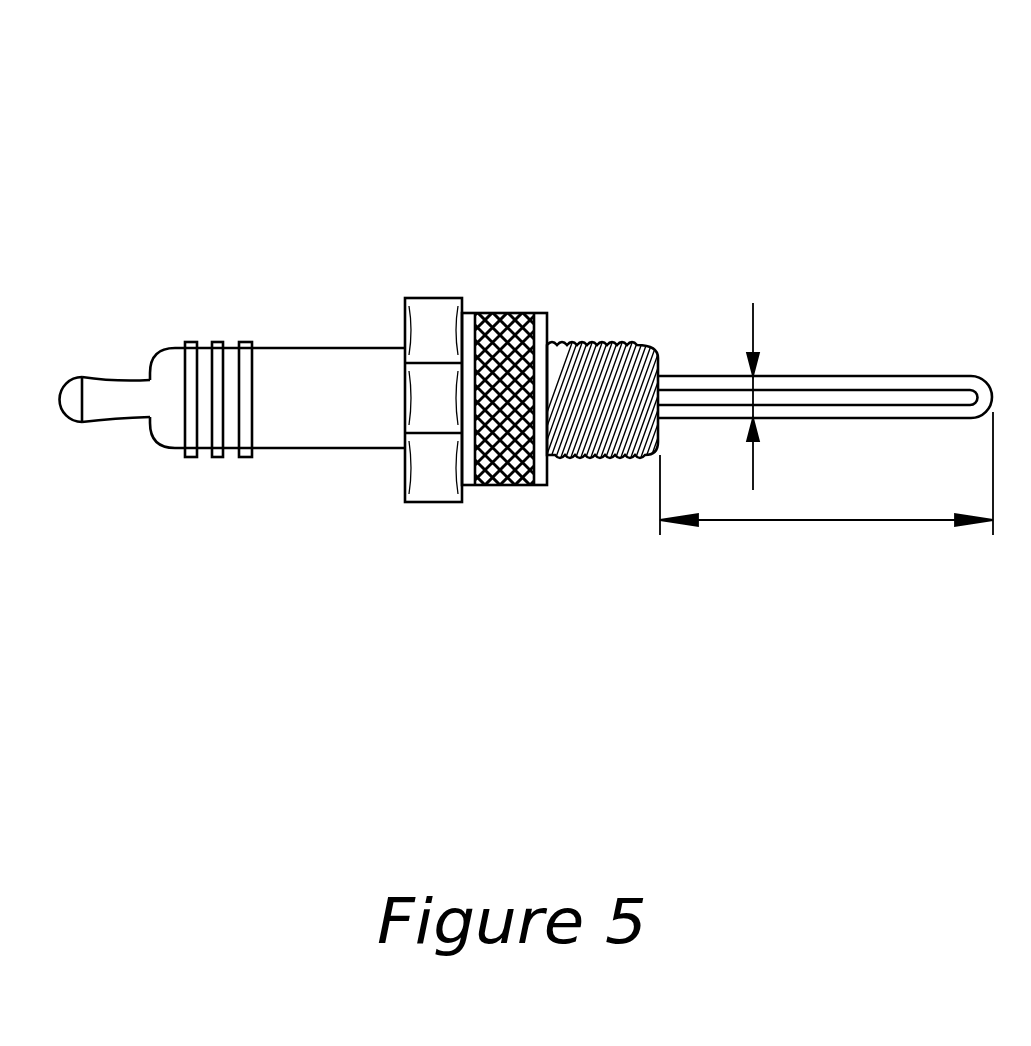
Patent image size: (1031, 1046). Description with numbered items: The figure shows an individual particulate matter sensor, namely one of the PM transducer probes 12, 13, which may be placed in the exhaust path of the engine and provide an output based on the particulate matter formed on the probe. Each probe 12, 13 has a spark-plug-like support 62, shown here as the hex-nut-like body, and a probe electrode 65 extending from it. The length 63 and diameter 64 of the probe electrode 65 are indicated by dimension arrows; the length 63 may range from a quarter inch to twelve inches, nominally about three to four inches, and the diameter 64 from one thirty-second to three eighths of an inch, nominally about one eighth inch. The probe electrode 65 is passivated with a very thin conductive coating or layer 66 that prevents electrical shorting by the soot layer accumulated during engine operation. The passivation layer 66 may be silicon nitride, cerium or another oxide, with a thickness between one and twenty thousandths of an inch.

The PM transducer probe 12 is at (538, 313).
The PM transducer probe 13 is at (538, 313).
The spark-plug-like support 62 is at (432, 298).
The length 63 is at (825, 522).
The diameter 64 is at (753, 319).
The probe electrode 65 is at (923, 397).
The passivation layer 66 is at (828, 375).